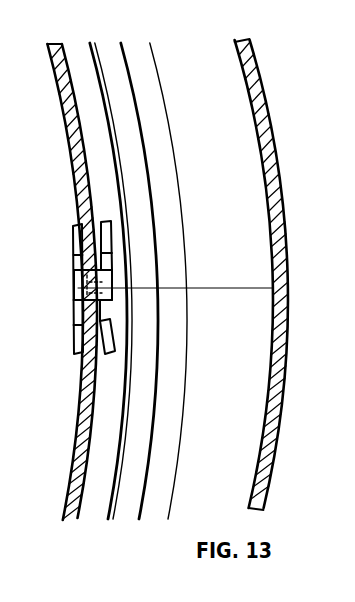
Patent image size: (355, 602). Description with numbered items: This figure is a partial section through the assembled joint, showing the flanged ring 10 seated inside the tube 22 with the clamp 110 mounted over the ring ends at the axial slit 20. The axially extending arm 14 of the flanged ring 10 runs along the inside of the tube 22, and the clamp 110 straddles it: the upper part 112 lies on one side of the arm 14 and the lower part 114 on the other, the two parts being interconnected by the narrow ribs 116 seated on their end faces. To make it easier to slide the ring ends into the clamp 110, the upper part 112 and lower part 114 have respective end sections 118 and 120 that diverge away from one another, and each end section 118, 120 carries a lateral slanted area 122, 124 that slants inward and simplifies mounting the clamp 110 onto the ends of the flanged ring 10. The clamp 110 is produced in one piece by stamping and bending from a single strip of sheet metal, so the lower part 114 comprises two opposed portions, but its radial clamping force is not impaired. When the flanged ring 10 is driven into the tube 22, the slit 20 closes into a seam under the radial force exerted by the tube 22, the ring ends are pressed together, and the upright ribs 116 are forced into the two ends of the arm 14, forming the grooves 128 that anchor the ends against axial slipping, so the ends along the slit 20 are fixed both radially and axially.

The flanged ring 10 is at (52, 282).
The arm 14 is at (80, 138).
The axial slit 20 is at (252, 288).
The tube 22 is at (100, 82).
The clamp 110 is at (119, 290).
The upper part 112 is at (112, 300).
The lower part 114 is at (82, 313).
The ribs 116 is at (74, 287).
The end section 118 is at (111, 221).
The end section 120 is at (72, 225).
The lateral slanted area 122 is at (73, 243).
The lateral slanted area 124 is at (82, 337).
The grooves 128 is at (102, 283).